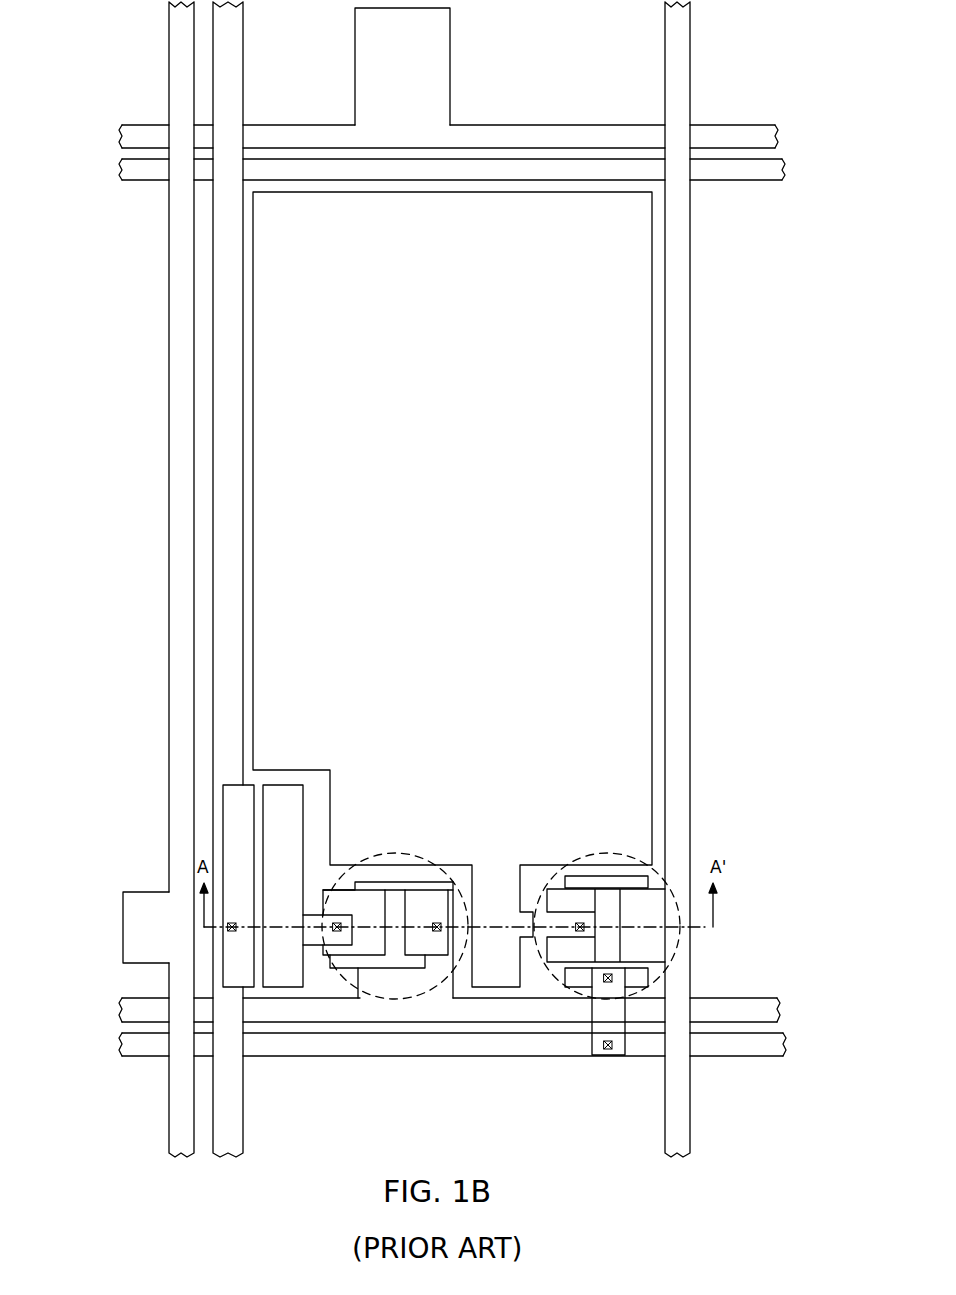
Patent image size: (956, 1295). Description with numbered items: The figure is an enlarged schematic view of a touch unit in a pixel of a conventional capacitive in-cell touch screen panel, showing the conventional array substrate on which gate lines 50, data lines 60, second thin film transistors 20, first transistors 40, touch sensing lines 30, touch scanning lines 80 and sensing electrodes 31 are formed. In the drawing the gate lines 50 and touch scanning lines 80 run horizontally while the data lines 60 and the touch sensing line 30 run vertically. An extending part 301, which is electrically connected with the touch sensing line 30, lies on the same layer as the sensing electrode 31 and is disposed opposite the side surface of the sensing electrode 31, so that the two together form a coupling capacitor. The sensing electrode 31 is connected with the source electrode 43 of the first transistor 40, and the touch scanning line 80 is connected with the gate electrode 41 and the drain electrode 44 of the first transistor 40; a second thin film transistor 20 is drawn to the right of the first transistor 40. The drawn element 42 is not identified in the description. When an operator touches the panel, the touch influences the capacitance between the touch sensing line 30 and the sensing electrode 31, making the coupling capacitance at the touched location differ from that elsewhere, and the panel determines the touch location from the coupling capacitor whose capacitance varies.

The second thin film transistor 20 is at (675, 955).
The touch sensing line 30 is at (232, 1083).
The extending part 301 is at (233, 807).
The sensing electrode 31 is at (283, 958).
The first transistor 40 is at (458, 945).
The gate electrode 41 is at (378, 975).
The active layer channel 42 is at (396, 903).
The source electrode 43 is at (352, 898).
The drain electrode 44 is at (433, 910).
The gate line 50 is at (148, 168).
The data line 60 is at (182, 1093).
The touch scanning line 80 is at (153, 132).